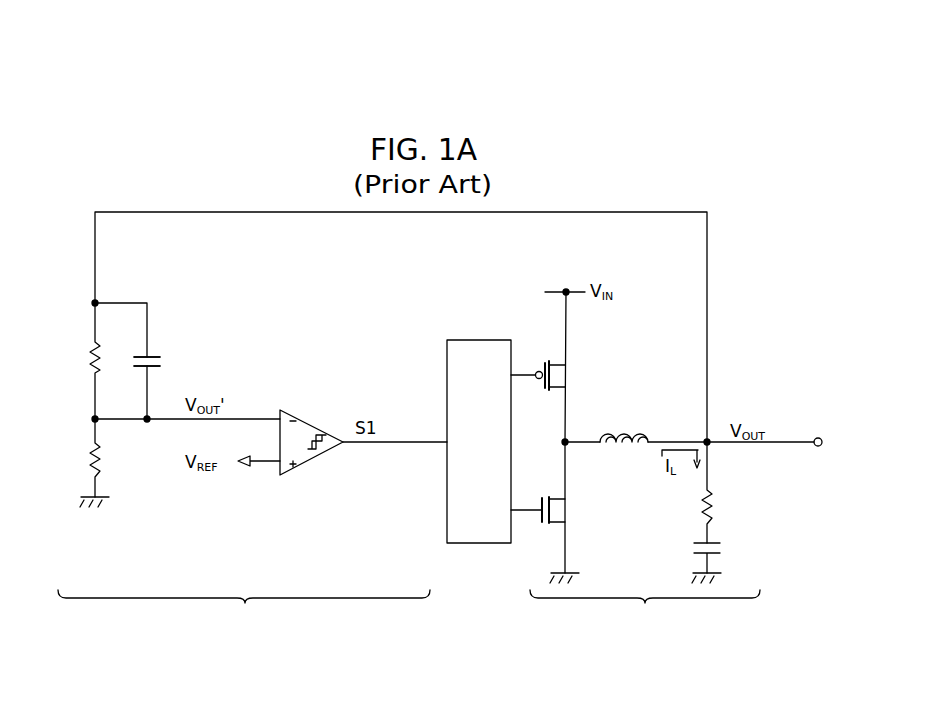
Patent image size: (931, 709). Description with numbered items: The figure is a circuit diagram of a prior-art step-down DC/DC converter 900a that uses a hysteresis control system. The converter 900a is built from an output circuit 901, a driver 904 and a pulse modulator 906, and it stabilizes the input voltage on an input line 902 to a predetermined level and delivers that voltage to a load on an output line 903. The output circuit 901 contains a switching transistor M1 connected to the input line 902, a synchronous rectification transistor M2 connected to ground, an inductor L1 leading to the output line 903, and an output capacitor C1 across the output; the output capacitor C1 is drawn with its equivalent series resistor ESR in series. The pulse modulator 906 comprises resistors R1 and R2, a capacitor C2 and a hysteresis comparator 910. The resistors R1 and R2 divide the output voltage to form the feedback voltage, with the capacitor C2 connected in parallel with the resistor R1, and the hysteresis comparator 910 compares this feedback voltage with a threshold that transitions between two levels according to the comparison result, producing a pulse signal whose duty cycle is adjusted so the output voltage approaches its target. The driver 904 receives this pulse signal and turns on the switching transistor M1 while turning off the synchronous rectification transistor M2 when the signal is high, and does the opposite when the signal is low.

The step-down DC/DC converter 900a is at (478, 666).
The output circuit 901 is at (645, 613).
The input line 902 is at (550, 290).
The output line 903 is at (795, 438).
The driver 904 is at (477, 545).
The pulse modulator 906 is at (244, 613).
The hysteresis comparator 910 is at (313, 457).
The resistor R1 is at (86, 362).
The resistor R2 is at (86, 460).
The capacitor C2 is at (140, 357).
The switching transistor M1 is at (576, 383).
The synchronous rectification transistor M2 is at (574, 506).
The inductor L1 is at (630, 428).
The equivalent series resistor ESR is at (716, 497).
The output capacitor C1 is at (726, 547).